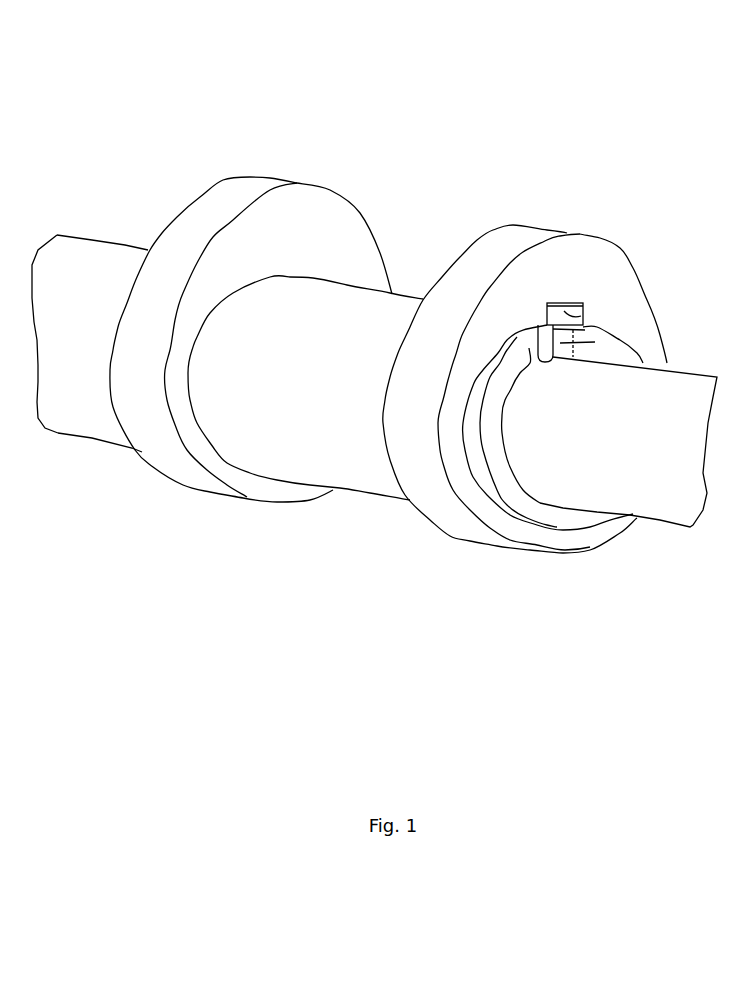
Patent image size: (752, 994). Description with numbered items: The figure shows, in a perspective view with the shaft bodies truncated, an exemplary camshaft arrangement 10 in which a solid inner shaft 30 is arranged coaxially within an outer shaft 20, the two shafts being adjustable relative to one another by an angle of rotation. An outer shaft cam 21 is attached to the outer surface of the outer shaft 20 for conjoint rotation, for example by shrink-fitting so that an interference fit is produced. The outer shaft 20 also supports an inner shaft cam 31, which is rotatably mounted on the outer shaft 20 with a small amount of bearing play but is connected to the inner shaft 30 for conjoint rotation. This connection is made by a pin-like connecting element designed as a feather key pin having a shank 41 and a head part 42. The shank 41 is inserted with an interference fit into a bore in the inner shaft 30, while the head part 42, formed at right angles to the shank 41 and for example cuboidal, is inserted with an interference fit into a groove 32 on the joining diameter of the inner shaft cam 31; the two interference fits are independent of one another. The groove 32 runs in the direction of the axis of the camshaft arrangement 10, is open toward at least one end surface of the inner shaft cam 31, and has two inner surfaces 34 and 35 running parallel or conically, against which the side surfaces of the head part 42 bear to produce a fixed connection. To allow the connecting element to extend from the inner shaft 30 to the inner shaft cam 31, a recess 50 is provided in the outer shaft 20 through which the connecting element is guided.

The camshaft arrangement 10 is at (400, 117).
The outer shaft 20 is at (508, 490).
The outer shaft cam 21 is at (241, 182).
The inner shaft 30 is at (668, 512).
The inner shaft cam 31 is at (528, 235).
The groove 32 is at (568, 297).
The inner surface of the groove 34 is at (578, 302).
The inner surface of the groove 35 is at (567, 302).
The shank 41 is at (548, 358).
The head part 42 is at (583, 327).
The recess 50 is at (580, 343).